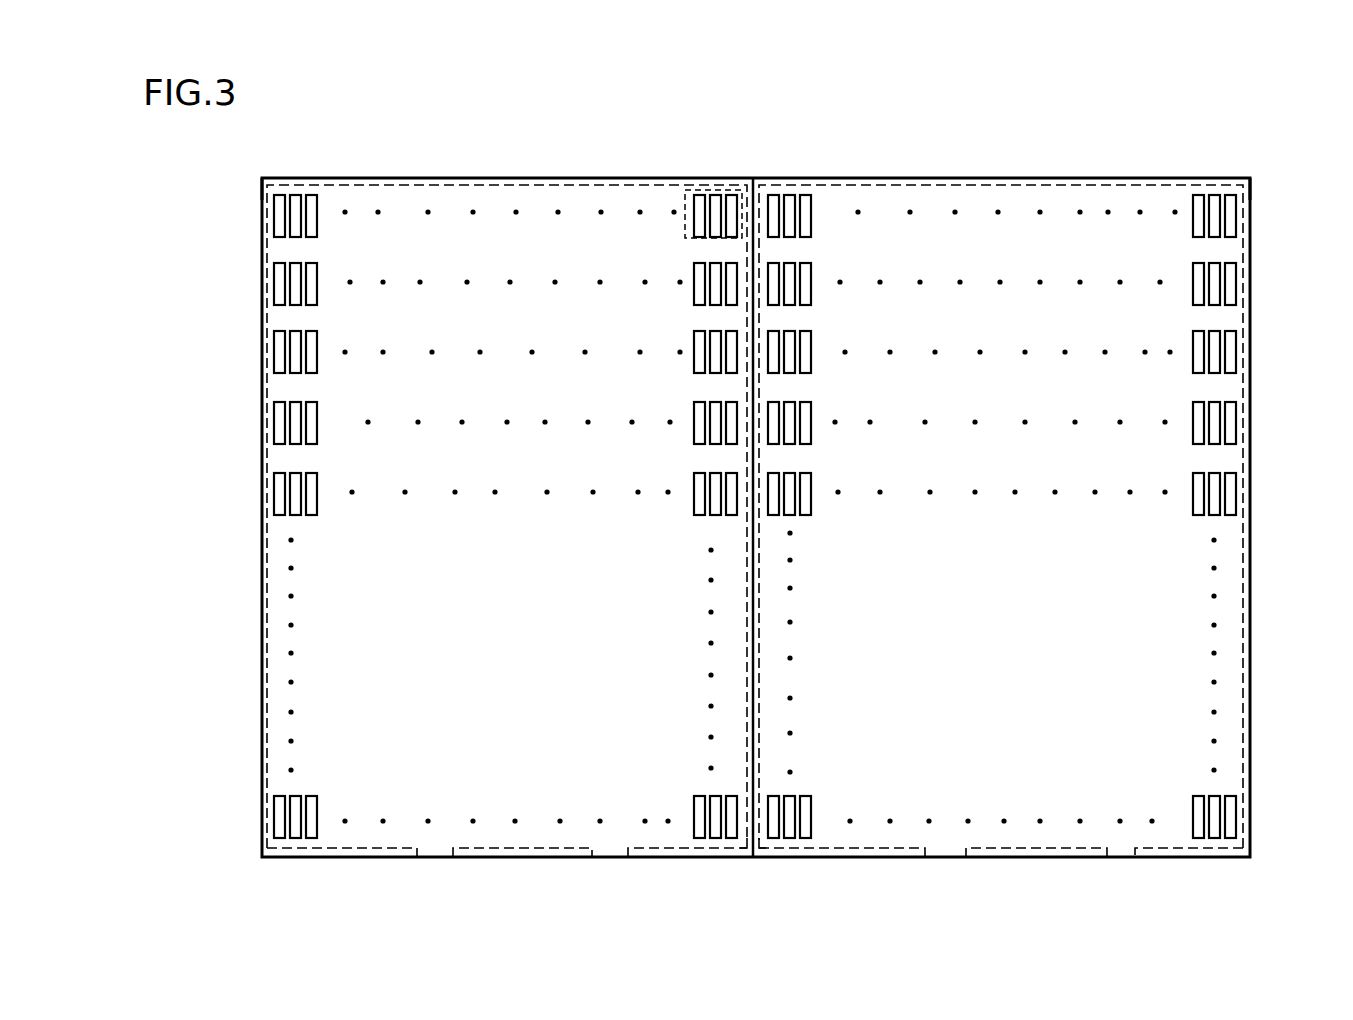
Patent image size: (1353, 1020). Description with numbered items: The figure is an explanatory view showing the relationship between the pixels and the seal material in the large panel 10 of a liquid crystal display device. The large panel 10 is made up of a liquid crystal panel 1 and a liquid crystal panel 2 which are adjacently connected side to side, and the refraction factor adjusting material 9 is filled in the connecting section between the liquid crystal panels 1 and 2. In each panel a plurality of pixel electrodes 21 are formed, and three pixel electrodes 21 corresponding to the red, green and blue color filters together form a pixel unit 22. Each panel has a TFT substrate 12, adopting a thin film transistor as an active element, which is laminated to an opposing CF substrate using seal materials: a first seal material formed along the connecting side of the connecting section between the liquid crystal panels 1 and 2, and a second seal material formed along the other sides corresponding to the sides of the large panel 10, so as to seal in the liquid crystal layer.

The liquid crystal panel 1 is at (748, 517).
The liquid crystal panel 2 is at (1252, 248).
The refraction factor adjusting material 9 is at (755, 196).
The large panel 10 is at (1055, 146).
The TFT substrate 12 is at (262, 197).
The pixel electrode 21 is at (730, 195).
The pixel unit 22 is at (743, 190).